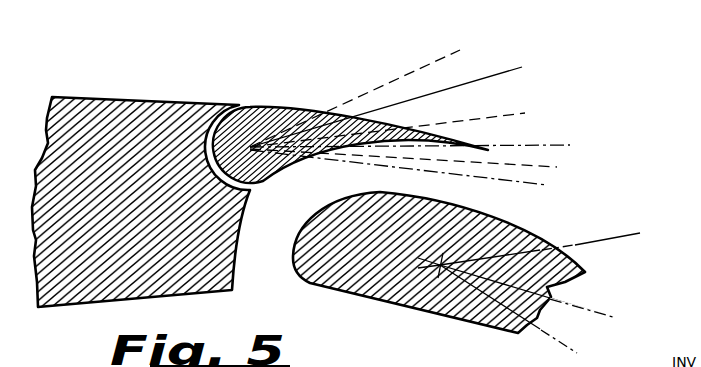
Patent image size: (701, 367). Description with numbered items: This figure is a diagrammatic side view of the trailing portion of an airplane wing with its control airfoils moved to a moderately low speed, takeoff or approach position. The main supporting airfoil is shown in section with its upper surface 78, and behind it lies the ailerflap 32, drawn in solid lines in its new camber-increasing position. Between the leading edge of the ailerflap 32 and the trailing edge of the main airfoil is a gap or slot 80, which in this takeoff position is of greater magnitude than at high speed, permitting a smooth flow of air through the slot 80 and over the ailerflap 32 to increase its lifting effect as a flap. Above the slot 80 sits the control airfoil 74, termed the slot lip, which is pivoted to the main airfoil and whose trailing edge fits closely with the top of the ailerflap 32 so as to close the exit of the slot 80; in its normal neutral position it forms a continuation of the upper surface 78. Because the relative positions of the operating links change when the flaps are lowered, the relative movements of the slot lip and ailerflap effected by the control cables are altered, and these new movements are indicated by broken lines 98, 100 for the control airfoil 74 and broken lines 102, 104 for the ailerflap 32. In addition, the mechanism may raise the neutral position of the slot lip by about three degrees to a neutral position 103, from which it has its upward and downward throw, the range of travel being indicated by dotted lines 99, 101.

The ailerflap 32 is at (368, 298).
The control airfoil 74 is at (286, 108).
The upper surface 78 is at (116, 98).
The slot 80 is at (245, 266).
The broken line 98 is at (466, 84).
The dotted line 99 is at (410, 73).
The broken line 100 is at (492, 178).
The dotted line 101 is at (530, 163).
The broken line 102 is at (577, 243).
The neutral position 103 is at (527, 112).
The broken line 104 is at (540, 329).